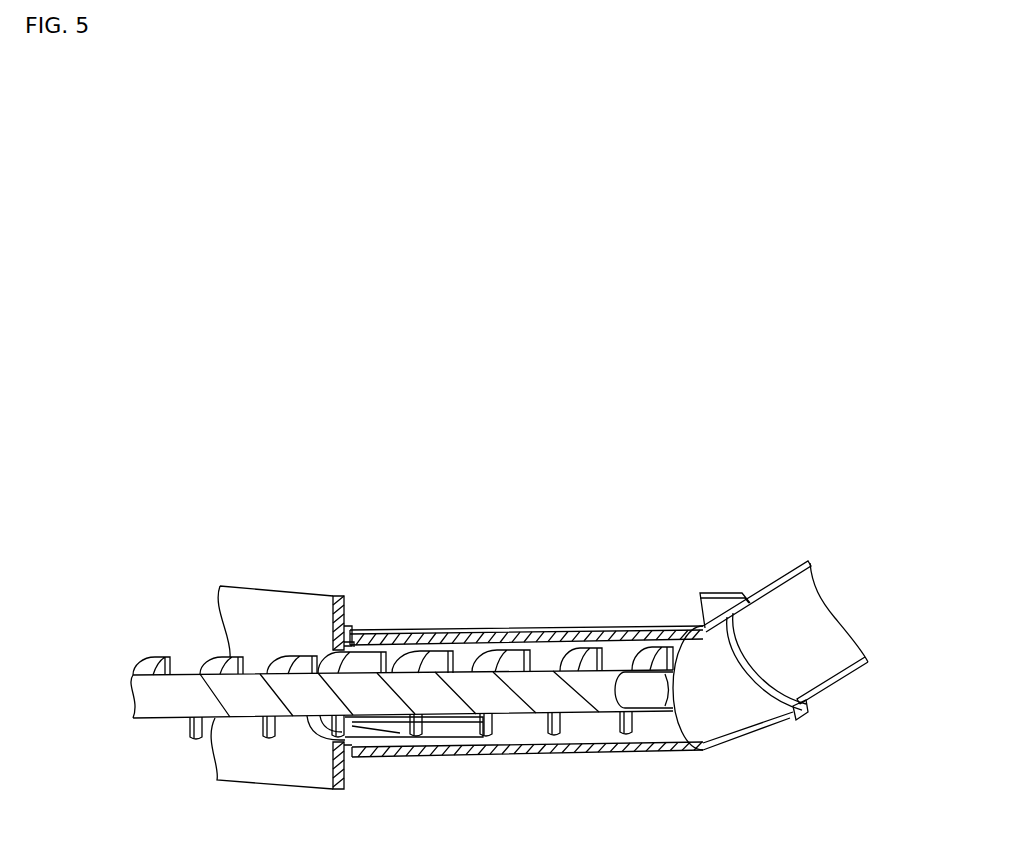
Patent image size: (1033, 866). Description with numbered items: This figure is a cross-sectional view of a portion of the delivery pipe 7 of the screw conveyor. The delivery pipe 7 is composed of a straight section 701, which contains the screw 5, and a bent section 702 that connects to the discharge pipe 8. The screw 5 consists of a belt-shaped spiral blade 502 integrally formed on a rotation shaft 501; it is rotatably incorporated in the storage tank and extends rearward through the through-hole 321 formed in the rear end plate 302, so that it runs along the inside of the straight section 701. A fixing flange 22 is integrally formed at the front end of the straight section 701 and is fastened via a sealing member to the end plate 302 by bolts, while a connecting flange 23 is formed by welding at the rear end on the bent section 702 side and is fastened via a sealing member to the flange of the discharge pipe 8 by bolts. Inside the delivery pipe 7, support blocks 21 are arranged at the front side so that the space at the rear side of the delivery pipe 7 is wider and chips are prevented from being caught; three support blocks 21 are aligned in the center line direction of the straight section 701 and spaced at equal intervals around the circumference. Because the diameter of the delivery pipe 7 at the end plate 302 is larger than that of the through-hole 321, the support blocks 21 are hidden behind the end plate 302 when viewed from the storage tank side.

The screw 5 is at (398, 679).
The rotation shaft 501 is at (164, 712).
The spiral blade 502 is at (200, 667).
The rear end plate 302 is at (268, 615).
The through-hole 321 is at (317, 727).
The fixing flange 22 is at (348, 633).
The support block 21 is at (442, 643).
The delivery pipe 7 is at (576, 685).
The straight section 701 is at (658, 748).
The bent section 702 is at (730, 723).
The connecting flange 23 is at (712, 612).
The discharge pipe 8 is at (787, 577).